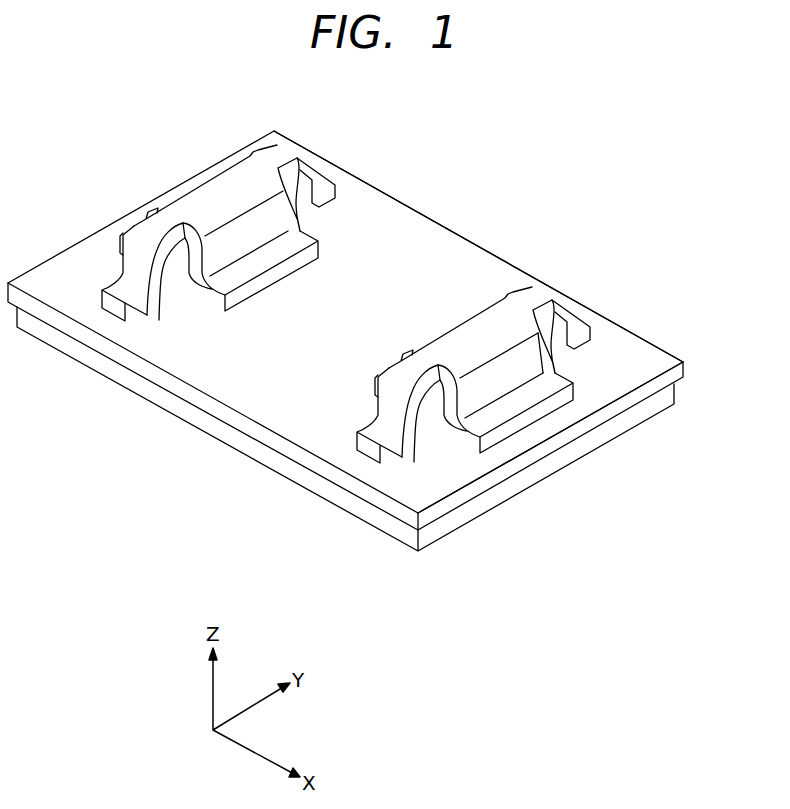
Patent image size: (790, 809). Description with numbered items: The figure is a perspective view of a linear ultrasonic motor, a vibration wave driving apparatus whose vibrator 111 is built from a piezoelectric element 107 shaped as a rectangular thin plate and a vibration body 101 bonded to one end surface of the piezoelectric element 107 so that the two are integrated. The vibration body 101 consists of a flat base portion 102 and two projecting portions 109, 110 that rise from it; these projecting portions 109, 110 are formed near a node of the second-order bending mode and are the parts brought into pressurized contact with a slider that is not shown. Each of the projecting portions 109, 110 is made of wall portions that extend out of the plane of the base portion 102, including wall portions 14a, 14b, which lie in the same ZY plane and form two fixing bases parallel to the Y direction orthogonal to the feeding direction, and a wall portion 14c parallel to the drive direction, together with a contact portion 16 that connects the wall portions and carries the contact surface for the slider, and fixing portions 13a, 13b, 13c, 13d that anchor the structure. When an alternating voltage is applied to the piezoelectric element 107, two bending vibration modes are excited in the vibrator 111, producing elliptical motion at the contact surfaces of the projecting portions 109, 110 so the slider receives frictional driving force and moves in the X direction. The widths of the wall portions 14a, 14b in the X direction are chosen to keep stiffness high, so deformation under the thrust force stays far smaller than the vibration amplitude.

The vibration body 101 is at (512, 275).
The base portion 102 is at (167, 360).
The piezoelectric element 107 is at (217, 430).
The projecting portion 109 is at (207, 193).
The projecting portion 110 is at (543, 420).
The vibrator 111 is at (567, 192).
The fixing portion 13a is at (383, 433).
The fixing portion 13b is at (592, 310).
The fixing portion 13c is at (493, 417).
The fixing portion 13d is at (380, 368).
The wall portion 14a is at (393, 395).
The wall portion 14b is at (568, 310).
The wall portion 14c is at (530, 355).
The contact portion 16 is at (597, 447).